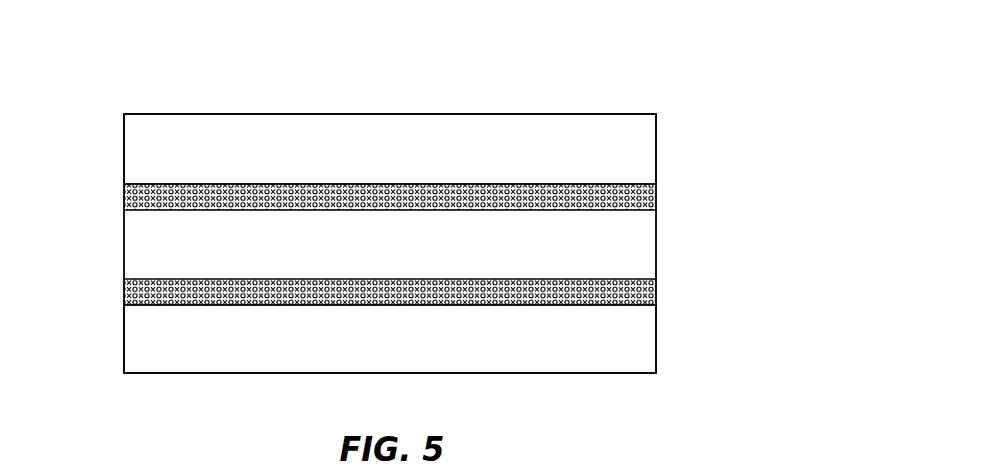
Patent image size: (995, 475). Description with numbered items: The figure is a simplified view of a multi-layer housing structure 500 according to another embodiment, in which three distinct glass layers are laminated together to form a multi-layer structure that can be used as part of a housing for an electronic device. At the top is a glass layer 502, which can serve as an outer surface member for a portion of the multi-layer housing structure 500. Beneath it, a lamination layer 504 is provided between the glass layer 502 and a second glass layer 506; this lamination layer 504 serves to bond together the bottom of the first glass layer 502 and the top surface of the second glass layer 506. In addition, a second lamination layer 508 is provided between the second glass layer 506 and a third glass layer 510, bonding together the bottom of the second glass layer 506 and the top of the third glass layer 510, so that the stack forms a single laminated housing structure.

The multi-layer housing structure 500 is at (346, 222).
The glass layer 502 is at (182, 127).
The lamination layer 504 is at (124, 200).
The second glass layer 506 is at (124, 248).
The second lamination layer 508 is at (124, 297).
The third glass layer 510 is at (182, 363).